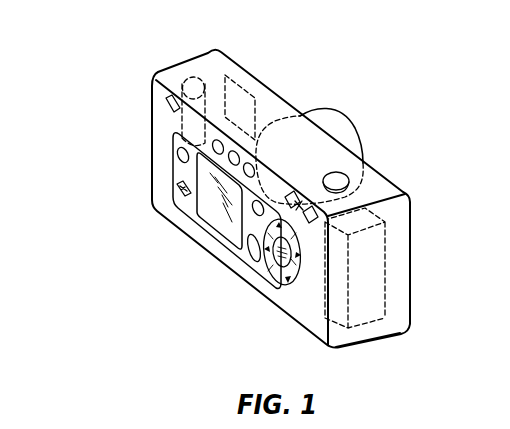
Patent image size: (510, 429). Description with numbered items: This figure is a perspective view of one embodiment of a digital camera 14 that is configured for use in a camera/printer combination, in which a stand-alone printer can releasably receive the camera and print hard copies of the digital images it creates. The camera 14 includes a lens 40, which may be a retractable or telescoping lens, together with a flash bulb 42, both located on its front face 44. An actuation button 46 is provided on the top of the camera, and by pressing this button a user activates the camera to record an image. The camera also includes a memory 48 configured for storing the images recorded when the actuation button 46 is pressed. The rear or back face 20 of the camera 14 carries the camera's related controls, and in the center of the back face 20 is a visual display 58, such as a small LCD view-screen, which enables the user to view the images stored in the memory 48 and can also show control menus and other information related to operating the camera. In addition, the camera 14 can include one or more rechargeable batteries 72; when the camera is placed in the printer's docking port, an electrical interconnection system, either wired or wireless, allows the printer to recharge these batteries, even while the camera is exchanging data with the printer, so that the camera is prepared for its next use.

The digital camera 14 is at (118, 135).
The back face 20 is at (156, 164).
The lens 40 is at (334, 118).
The flash bulb 42 is at (258, 98).
The front face 44 is at (409, 238).
The actuation button 46 is at (341, 172).
The memory 48 is at (383, 341).
The visual display 58 is at (233, 228).
The rechargeable batteries 72 is at (160, 64).